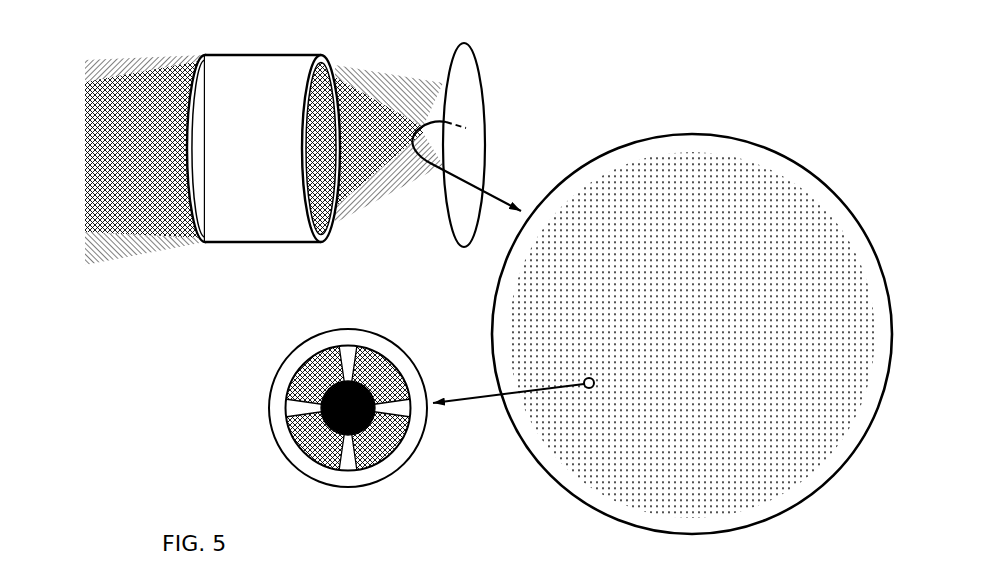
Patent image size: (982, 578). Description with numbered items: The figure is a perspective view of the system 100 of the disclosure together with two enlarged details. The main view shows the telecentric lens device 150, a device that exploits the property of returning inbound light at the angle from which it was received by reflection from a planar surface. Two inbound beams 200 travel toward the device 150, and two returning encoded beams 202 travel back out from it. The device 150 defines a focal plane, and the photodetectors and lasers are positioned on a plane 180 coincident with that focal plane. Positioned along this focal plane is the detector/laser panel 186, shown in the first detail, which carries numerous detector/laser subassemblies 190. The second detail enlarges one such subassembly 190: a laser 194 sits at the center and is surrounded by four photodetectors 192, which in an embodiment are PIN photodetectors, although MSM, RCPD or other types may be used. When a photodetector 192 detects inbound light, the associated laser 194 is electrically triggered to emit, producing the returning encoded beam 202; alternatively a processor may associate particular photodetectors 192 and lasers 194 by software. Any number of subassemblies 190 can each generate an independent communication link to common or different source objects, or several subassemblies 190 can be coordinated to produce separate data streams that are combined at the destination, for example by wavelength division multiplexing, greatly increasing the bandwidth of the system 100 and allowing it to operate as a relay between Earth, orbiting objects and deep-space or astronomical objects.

The system 100 is at (527, 47).
The device 150 is at (229, 77).
The plane 180 is at (485, 105).
The detector/laser panel 186 is at (497, 287).
The detector/laser subassembly 190 is at (310, 417).
The photodetector 192 is at (372, 358).
The laser 194 is at (350, 435).
The inbound beam 200 is at (397, 75).
The returning encoded beam 202 is at (378, 72).